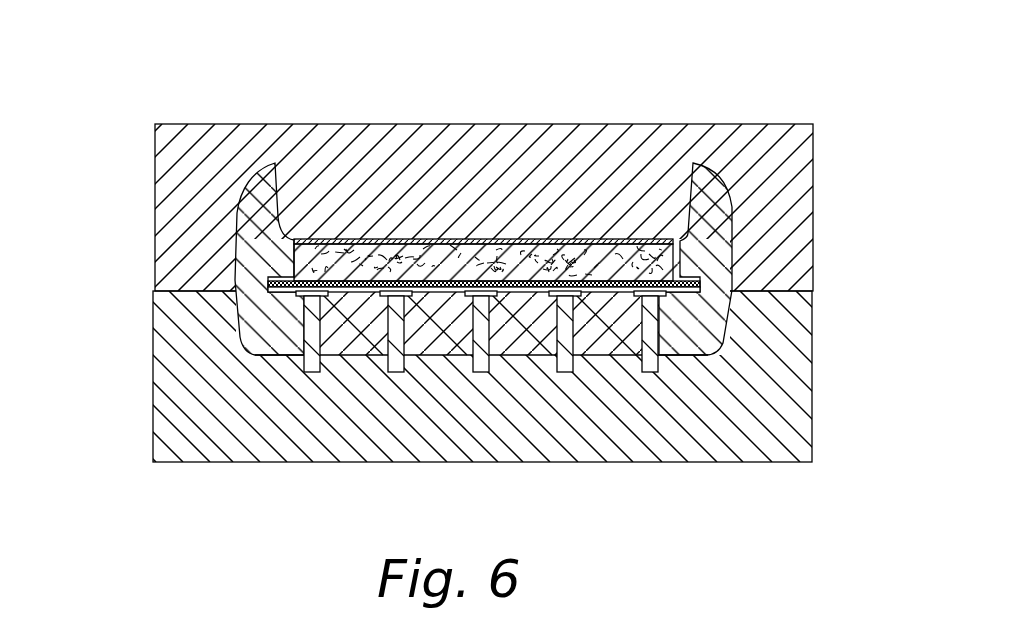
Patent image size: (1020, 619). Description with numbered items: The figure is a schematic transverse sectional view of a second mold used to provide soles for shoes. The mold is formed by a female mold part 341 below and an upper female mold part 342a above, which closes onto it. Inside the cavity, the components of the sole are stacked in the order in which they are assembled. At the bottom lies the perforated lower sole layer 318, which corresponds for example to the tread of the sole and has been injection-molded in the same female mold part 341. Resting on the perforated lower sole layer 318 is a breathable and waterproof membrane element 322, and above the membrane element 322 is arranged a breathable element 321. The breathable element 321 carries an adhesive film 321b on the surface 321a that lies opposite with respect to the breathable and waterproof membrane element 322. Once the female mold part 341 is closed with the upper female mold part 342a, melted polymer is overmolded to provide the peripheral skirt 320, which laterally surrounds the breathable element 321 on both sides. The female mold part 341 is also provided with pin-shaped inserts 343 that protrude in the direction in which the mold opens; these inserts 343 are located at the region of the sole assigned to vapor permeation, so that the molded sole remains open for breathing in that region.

The upper female mold part 342a is at (197, 130).
The female mold part 341 is at (238, 435).
The peripheral skirt 320 is at (236, 233).
The breathable element 321 is at (541, 163).
The surface 321a is at (558, 262).
The adhesive film 321b is at (473, 239).
The pin-shaped inserts 343 is at (393, 360).
The breathable and waterproof membrane element 322 is at (523, 292).
The perforated lower sole layer 318 is at (696, 333).